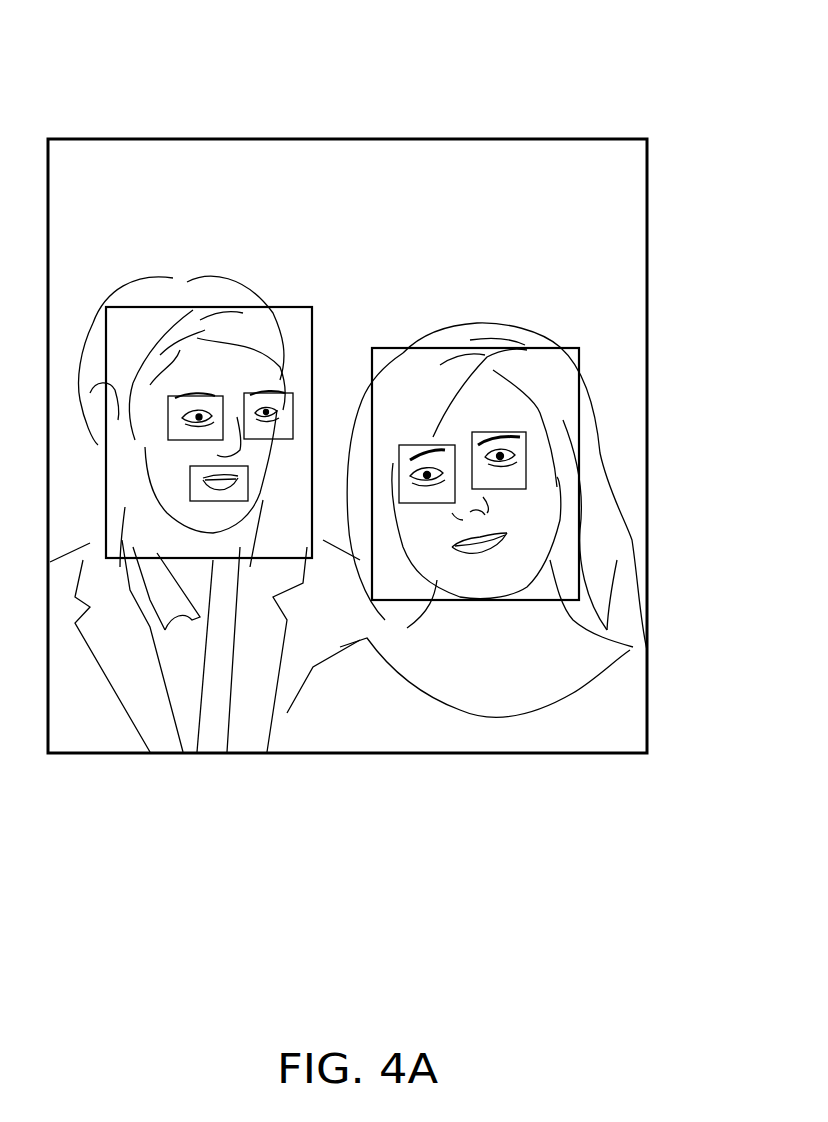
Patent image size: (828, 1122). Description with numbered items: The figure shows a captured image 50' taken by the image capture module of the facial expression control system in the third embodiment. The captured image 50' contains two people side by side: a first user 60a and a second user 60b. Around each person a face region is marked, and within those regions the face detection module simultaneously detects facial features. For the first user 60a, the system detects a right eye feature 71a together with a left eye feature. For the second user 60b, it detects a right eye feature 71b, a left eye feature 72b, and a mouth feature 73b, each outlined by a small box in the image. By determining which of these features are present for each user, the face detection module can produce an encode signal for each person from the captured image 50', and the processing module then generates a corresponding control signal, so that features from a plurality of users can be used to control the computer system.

The captured image 50' is at (389, 386).
The first user 60a is at (377, 348).
The second user 60b is at (282, 308).
The right eye feature 71a is at (410, 445).
The right eye feature 71b is at (175, 441).
The left eye feature 72b is at (293, 413).
The mouth feature 73b is at (190, 503).